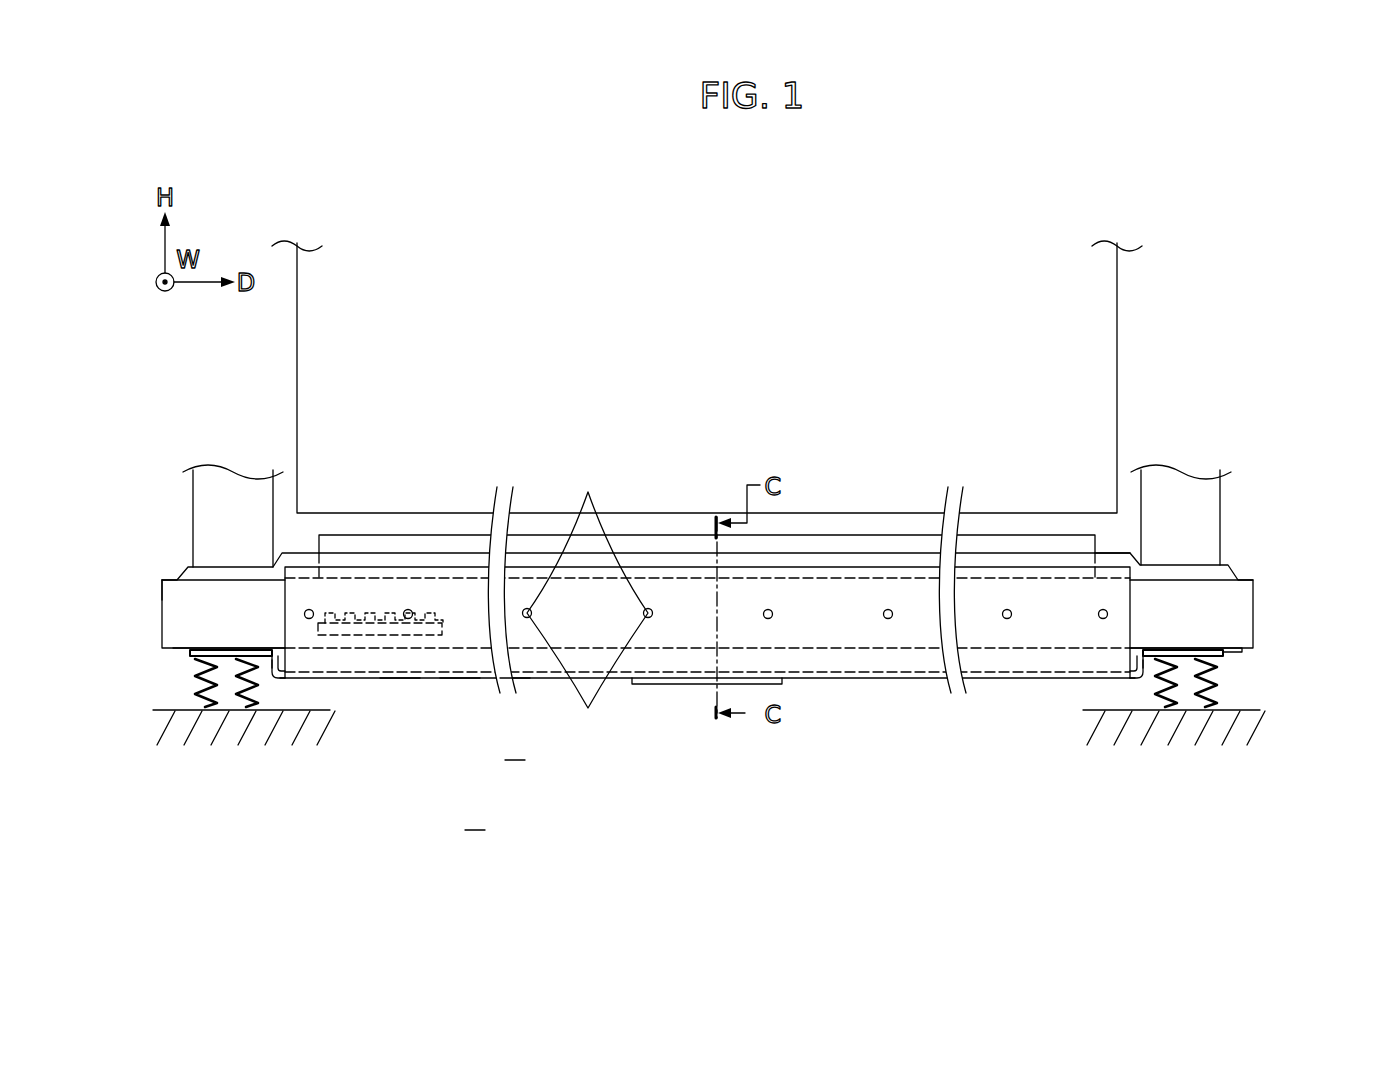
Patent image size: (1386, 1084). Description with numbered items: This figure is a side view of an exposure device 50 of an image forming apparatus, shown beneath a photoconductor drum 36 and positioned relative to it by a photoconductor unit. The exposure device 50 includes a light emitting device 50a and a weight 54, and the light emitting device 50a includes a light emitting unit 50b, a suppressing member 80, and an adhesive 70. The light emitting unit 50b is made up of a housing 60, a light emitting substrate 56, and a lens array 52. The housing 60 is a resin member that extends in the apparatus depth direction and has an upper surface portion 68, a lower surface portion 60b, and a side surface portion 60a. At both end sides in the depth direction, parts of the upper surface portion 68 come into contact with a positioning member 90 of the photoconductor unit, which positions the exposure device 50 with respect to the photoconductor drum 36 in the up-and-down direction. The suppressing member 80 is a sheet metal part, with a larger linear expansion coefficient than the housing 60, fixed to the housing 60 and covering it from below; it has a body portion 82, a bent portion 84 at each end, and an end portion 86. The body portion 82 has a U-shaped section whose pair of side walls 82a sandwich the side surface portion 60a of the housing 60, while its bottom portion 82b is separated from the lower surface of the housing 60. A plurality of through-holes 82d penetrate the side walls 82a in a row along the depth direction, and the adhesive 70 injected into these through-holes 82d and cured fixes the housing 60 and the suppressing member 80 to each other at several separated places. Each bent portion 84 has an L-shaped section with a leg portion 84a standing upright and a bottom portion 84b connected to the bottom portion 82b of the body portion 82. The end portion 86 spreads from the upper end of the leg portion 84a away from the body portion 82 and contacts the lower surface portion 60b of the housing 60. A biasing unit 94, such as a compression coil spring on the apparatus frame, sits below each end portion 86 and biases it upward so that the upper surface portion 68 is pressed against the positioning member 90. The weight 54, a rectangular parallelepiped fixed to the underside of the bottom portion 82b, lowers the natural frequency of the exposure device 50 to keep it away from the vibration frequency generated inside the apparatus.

The photoconductor drum 36 is at (1117, 352).
The exposure device 50 is at (449, 855).
The light emitting device 50a is at (496, 789).
The light emitting unit 50b is at (148, 588).
The lens array 52 is at (1062, 533).
The weight 54 is at (768, 684).
The light emitting substrate 56 is at (337, 608).
The housing 60 is at (1318, 592).
The side surface portion 60a is at (1238, 595).
The lower surface portion 60b is at (1242, 657).
The upper surface portion 68 is at (1117, 552).
The adhesive 70 is at (588, 677).
The suppressing member 80 is at (514, 704).
The body portion 82 is at (545, 680).
The side walls 82a is at (399, 668).
The bottom portion 82b is at (462, 680).
The through-holes 82d is at (587, 583).
The bent portion 84 is at (247, 792).
The leg portion 84a is at (287, 676).
The bottom portion 84b is at (272, 666).
The end portion 86 is at (190, 653).
The positioning member 90 is at (193, 490).
The biasing unit 94 is at (184, 685).